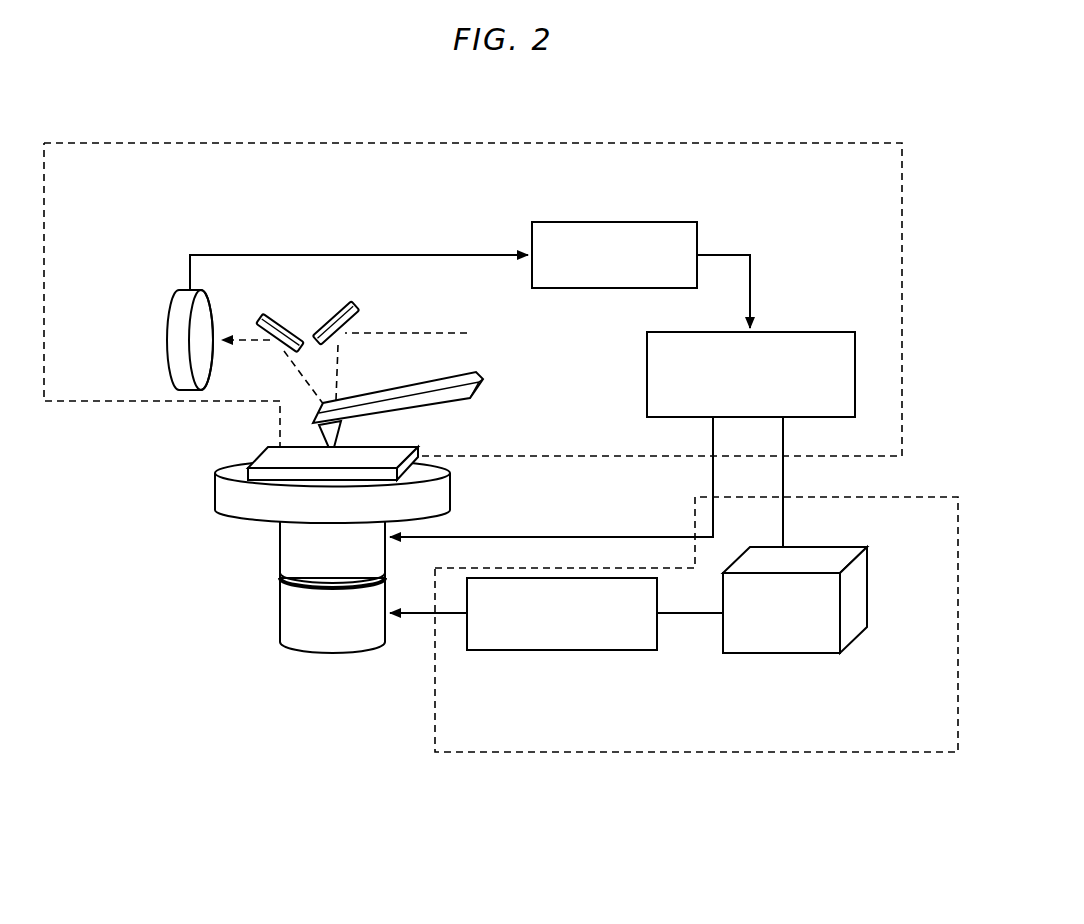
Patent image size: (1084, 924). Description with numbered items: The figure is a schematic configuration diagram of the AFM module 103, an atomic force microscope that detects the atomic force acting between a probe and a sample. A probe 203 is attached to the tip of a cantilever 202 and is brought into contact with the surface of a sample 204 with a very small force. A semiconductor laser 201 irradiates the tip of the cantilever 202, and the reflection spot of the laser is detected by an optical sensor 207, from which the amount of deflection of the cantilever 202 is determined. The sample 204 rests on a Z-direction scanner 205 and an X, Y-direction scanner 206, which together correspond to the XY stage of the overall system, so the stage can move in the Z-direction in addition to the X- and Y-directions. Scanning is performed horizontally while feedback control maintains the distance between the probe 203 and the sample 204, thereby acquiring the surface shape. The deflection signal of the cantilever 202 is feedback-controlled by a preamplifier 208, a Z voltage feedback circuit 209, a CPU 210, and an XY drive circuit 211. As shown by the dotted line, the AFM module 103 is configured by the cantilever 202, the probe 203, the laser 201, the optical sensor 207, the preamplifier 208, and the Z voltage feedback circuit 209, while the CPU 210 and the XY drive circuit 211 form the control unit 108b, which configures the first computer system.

The AFM module 103 is at (758, 143).
The control unit 108b is at (683, 752).
The semiconductor laser 201 is at (450, 332).
The cantilever 202 is at (480, 376).
The probe 203 is at (340, 437).
The sample 204 is at (265, 452).
The Z-direction scanner 205 is at (300, 548).
The X, Y-direction scanner 206 is at (300, 625).
The optical sensor 207 is at (168, 322).
The preamplifier 208 is at (615, 222).
The Z voltage feedback circuit 209 is at (820, 332).
The CPU 210 is at (868, 600).
The XY drive circuit 211 is at (571, 650).